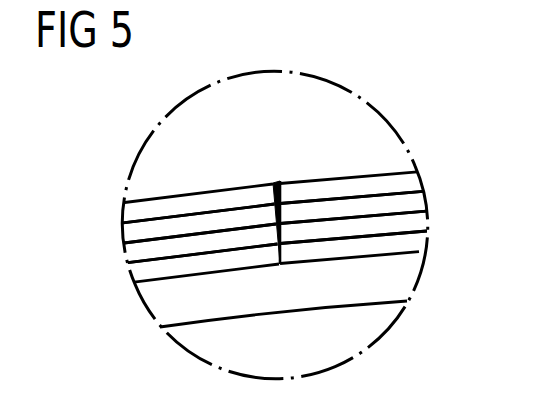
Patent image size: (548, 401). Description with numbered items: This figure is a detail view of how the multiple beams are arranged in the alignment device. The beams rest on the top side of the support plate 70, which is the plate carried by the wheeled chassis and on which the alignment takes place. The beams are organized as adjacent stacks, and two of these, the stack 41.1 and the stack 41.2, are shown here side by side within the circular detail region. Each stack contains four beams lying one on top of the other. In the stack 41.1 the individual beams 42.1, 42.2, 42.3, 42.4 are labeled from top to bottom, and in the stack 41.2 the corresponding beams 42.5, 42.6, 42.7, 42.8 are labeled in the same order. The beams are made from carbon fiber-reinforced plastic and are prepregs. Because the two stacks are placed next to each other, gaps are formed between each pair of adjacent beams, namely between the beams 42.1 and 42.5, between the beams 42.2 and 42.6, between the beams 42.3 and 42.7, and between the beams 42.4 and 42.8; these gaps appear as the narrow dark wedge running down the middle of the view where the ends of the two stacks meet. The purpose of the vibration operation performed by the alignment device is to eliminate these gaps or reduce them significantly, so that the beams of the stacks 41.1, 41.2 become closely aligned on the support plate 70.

The stack 41.1 is at (210, 189).
The stack 41.2 is at (318, 176).
The beam 42.1 is at (130, 207).
The beam 42.2 is at (130, 233).
The beam 42.3 is at (128, 256).
The beam 42.4 is at (133, 272).
The beam 42.5 is at (414, 178).
The beam 42.6 is at (415, 202).
The beam 42.7 is at (418, 220).
The beam 42.8 is at (423, 240).
The support plate 70 is at (410, 277).